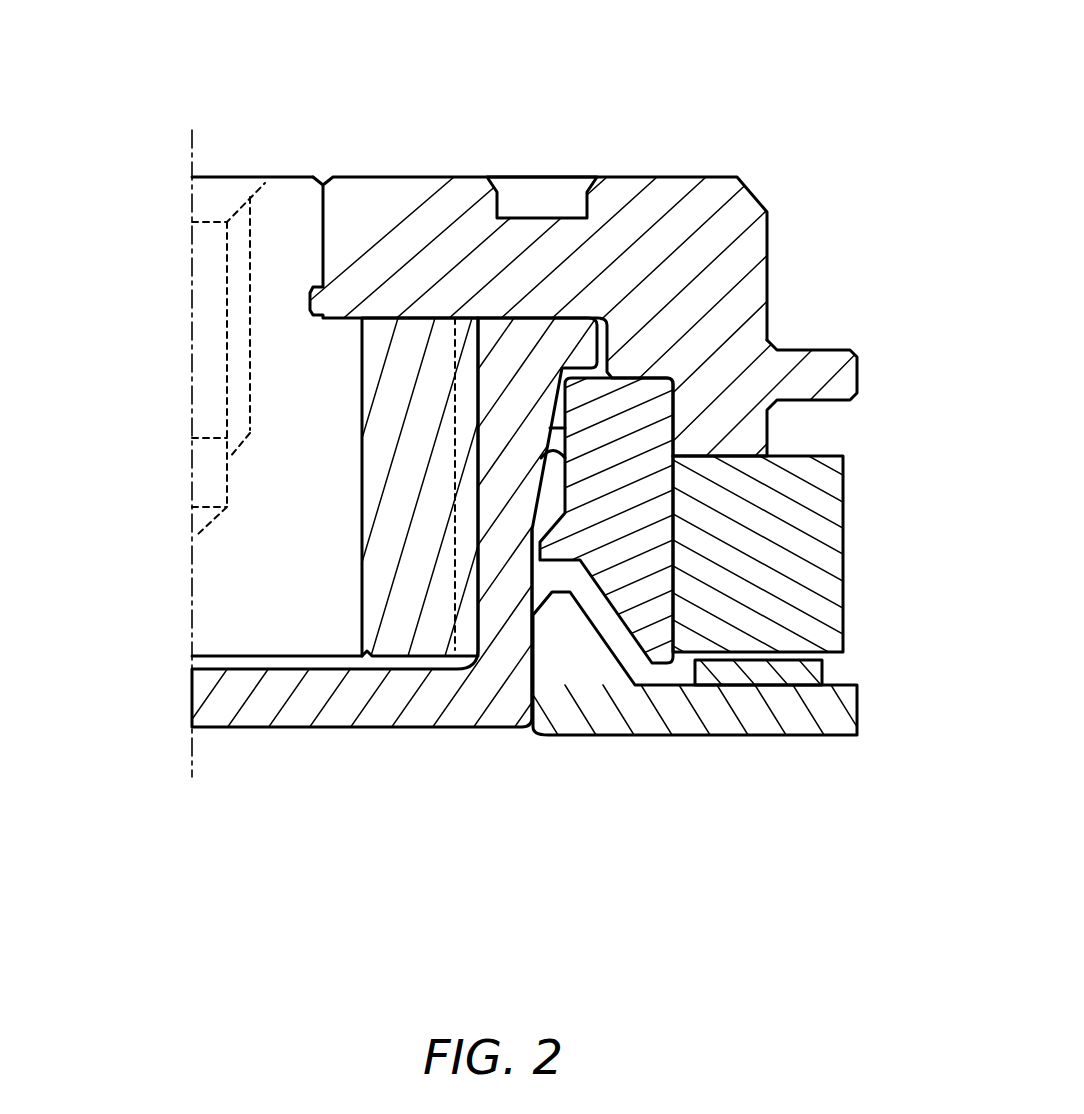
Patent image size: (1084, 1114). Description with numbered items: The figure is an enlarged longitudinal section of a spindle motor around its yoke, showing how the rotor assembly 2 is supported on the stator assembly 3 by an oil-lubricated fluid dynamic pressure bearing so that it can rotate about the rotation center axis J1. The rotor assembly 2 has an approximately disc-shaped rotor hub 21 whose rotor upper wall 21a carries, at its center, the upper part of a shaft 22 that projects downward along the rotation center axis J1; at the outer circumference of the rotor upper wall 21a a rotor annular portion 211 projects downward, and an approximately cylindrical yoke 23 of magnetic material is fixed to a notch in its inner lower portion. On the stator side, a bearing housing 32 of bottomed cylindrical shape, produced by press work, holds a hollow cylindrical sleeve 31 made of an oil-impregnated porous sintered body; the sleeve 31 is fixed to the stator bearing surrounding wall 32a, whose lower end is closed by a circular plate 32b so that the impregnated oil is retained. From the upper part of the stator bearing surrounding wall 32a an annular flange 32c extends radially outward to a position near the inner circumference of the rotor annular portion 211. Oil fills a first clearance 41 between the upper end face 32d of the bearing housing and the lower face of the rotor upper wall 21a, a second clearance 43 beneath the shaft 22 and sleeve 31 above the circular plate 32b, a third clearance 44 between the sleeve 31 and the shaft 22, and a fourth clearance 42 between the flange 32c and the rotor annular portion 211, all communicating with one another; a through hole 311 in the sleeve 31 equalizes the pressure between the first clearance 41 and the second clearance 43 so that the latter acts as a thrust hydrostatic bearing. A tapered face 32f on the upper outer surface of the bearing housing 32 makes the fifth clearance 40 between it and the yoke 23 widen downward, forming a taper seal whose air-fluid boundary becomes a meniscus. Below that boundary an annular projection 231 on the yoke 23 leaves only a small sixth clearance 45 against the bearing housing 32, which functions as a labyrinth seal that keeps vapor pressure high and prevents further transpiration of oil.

The rotation center axis J1 is at (187, 128).
The rotor assembly 2 is at (558, 72).
The rotor hub 21 is at (372, 190).
The rotor upper wall 21a is at (436, 228).
The rotor annular portion 211 is at (733, 403).
The shaft 22 is at (230, 190).
The yoke 23 is at (650, 592).
The projection 231 is at (638, 688).
The stator assembly 3 is at (480, 838).
The sleeve 31 is at (377, 582).
The through hole 311 is at (465, 665).
The bearing housing 32 is at (488, 602).
The stator bearing surrounding wall 32a is at (507, 534).
The circular plate 32b is at (225, 710).
The flange 32c is at (560, 312).
The upper end face of the bearing housing 32d is at (582, 332).
The tapered face 32f is at (606, 337).
The fifth clearance 40 is at (560, 480).
The first clearance 41 is at (521, 314).
The fourth clearance 42 is at (610, 335).
The second clearance 43 is at (250, 655).
The third clearance 44 is at (358, 525).
The sixth clearance 45 is at (540, 565).